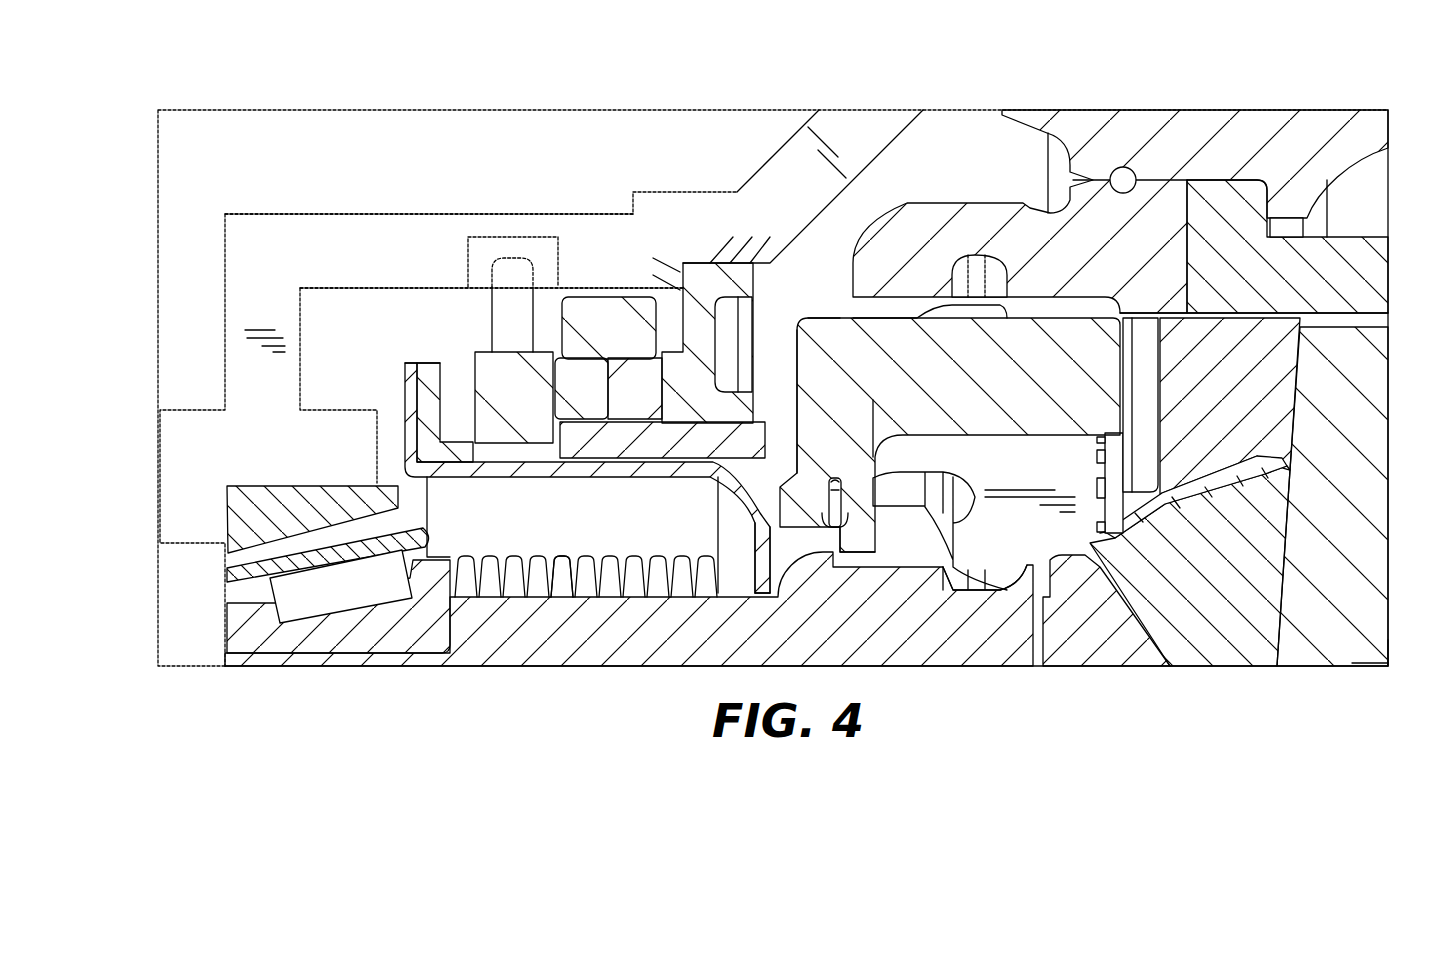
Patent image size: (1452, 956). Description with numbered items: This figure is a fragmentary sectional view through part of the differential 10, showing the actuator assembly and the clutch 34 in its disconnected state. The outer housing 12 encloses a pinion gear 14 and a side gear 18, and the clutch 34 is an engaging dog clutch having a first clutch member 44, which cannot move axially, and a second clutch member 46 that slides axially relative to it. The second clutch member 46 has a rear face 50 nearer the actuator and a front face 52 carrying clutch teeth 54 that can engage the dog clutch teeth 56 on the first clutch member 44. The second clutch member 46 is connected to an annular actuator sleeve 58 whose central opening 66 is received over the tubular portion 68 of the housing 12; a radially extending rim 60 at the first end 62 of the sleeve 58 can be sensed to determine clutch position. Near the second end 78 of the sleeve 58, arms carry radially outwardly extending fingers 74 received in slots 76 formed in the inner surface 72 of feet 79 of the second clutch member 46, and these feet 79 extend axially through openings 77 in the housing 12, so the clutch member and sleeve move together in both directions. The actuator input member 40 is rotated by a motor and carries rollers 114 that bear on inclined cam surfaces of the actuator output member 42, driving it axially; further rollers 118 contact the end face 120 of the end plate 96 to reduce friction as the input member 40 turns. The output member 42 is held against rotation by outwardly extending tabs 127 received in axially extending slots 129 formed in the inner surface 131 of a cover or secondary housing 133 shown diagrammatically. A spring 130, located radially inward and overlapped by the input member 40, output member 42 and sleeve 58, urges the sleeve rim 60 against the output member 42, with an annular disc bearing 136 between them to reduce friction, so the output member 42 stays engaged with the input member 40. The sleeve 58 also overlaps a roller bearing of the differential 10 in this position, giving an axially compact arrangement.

The differential 10 is at (1340, 707).
The outer housing 12 is at (1163, 210).
The pinion gear 14 is at (1220, 633).
The side gear 18 is at (1093, 630).
The clutch 34 is at (980, 593).
The actuator input member 40 is at (603, 327).
The actuator output member 42 is at (517, 425).
The first clutch member 44 is at (1257, 345).
The second clutch member 46 is at (910, 350).
The rear face 50 is at (795, 357).
The front face 52 is at (1127, 375).
The clutch teeth 54 is at (1117, 493).
The dog clutch teeth 56 is at (1147, 448).
The actuator sleeve 58 is at (638, 514).
The radially extending rim 60 is at (413, 367).
The first end 62 is at (407, 390).
The central opening 66 is at (775, 585).
The tubular portion 68 is at (518, 645).
The inner surface 72 is at (855, 552).
The fingers 74 is at (837, 502).
The slots 76 is at (833, 473).
The openings 77 is at (886, 330).
The second end 78 is at (837, 490).
The feet 79 is at (820, 357).
The end plate 96 is at (702, 295).
The rollers 114 is at (577, 373).
The rollers 118 is at (637, 380).
The end face 120 is at (637, 423).
The tabs 127 is at (518, 270).
The axially extending slots 129 is at (472, 240).
The spring 130 is at (570, 575).
The inner surface 131 is at (423, 290).
The cover or secondary housing 133 is at (347, 235).
The annular disc bearing 136 is at (437, 393).